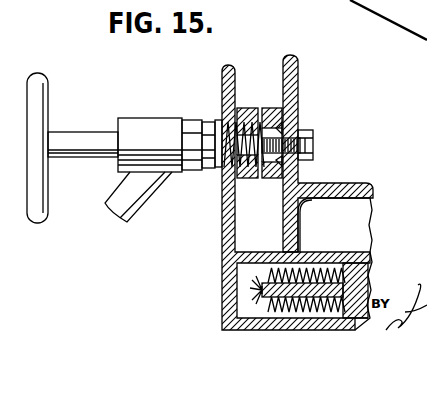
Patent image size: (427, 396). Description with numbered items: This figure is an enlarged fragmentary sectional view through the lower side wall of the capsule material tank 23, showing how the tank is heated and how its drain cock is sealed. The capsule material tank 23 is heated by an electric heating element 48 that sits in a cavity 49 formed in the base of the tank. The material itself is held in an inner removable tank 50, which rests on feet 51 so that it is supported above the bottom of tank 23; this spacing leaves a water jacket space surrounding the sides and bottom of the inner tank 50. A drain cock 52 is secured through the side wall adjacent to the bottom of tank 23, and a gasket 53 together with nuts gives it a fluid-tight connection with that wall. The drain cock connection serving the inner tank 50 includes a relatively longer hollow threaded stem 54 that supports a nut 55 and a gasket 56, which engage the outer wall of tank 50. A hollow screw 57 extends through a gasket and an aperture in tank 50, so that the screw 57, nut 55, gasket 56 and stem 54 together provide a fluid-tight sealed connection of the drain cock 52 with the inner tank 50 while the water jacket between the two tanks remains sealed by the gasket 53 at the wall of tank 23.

The capsule material tank 23 is at (223, 222).
The electric heating element 48 is at (258, 297).
The cavity 49 is at (247, 273).
The inner removable tank 50 is at (338, 184).
The feet 51 is at (303, 231).
The drain cock 52 is at (147, 122).
The gasket 53 is at (220, 120).
The hollow threaded stem 54 is at (252, 181).
The nut 55 is at (270, 107).
The gasket 56 is at (283, 121).
The hollow screw 57 is at (313, 132).